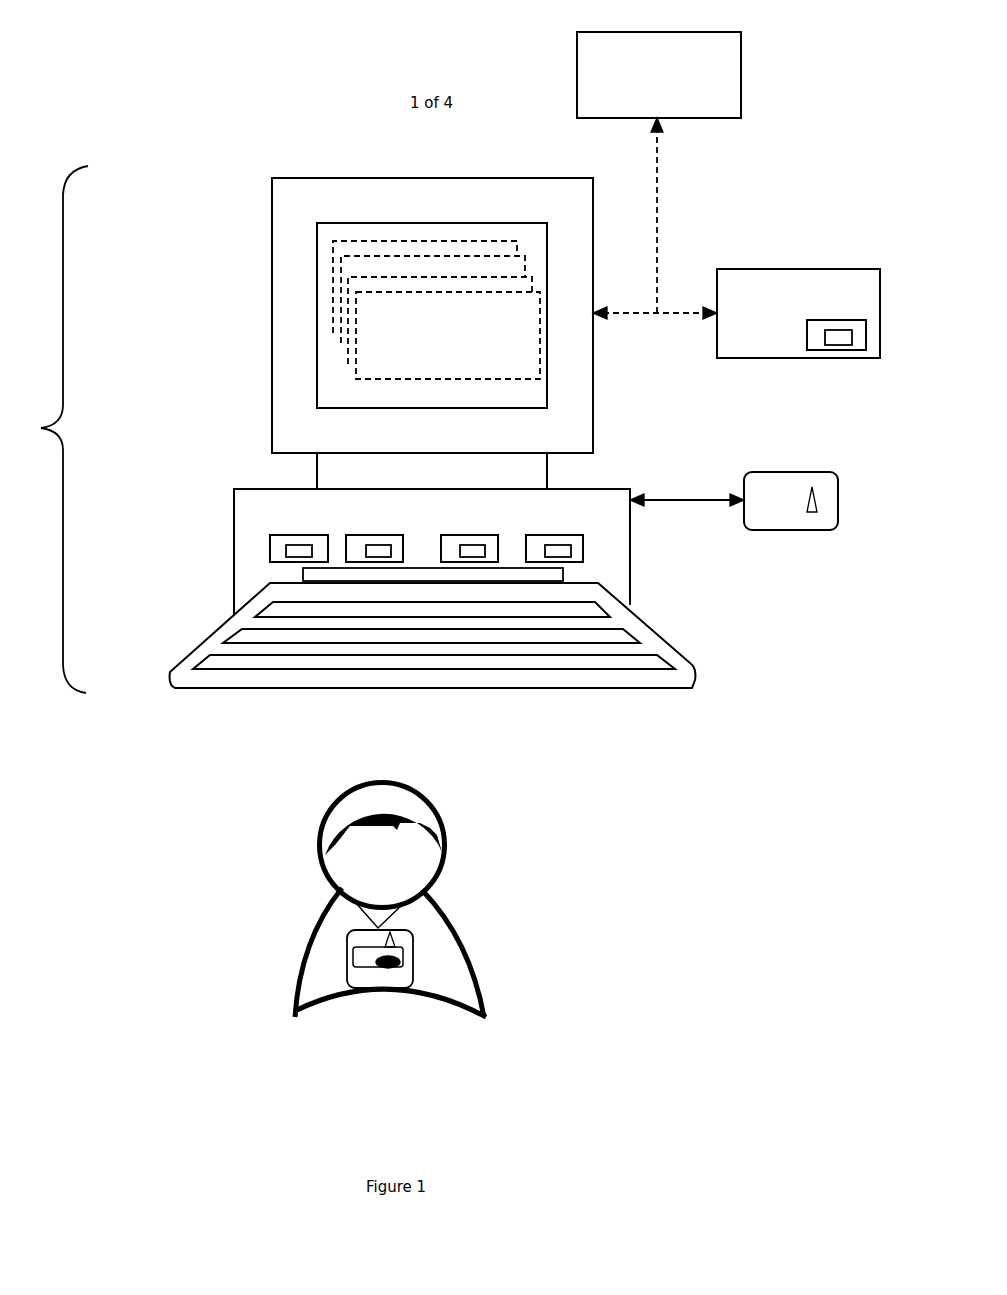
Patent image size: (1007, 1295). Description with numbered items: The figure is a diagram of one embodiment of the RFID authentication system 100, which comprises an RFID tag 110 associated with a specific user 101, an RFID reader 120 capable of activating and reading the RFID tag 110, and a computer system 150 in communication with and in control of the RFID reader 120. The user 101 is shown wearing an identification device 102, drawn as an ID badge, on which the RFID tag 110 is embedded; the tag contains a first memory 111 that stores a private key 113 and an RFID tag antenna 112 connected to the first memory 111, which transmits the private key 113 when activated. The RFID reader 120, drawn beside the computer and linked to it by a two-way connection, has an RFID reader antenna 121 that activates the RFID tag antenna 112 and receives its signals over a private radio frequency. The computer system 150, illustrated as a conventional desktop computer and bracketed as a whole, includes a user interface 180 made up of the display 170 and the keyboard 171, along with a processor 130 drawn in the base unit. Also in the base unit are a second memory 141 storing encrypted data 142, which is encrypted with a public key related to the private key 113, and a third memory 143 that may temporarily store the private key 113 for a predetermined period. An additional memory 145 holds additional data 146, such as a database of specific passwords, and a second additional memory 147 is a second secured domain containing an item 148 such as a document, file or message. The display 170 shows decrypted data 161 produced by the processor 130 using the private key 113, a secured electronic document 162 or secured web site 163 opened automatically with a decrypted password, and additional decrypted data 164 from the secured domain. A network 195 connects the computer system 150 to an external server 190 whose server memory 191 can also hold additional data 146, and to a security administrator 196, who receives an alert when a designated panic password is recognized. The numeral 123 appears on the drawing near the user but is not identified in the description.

The authentication system 100 is at (98, 48).
The computer system 150 is at (44, 429).
The display 170 is at (423, 178).
The decrypted data 161 is at (333, 285).
The secured electronic document 162 is at (341, 305).
The secured web site 163 is at (348, 322).
The additional decrypted data 164 is at (356, 335).
The user interface 180 is at (273, 442).
The processor 130 is at (303, 573).
The second memory 141 is at (270, 550).
The encrypted data 142 is at (298, 545).
The third memory 143 is at (380, 535).
The private key 113 is at (378, 545).
The additional memory 145 is at (475, 535).
The additional data 146 is at (472, 545).
The second additional memory 147 is at (560, 535).
The item 148 is at (558, 545).
The keyboard 171 is at (433, 688).
The security administrator 196 is at (741, 73).
The network 195 is at (643, 315).
The server 190 is at (798, 313).
The server memory 191 is at (837, 322).
The RFID reader 120 is at (838, 500).
The RFID reader antenna 121 is at (817, 500).
The user 101 is at (448, 847).
The identification device 102 is at (423, 898).
The user 123 is at (268, 964).
The RFID tag 110 is at (375, 973).
The first memory 111 is at (403, 957).
The RFID tag antenna 112 is at (395, 934).